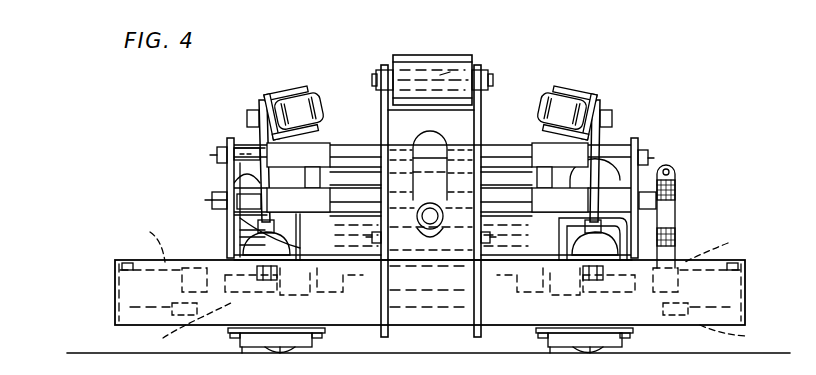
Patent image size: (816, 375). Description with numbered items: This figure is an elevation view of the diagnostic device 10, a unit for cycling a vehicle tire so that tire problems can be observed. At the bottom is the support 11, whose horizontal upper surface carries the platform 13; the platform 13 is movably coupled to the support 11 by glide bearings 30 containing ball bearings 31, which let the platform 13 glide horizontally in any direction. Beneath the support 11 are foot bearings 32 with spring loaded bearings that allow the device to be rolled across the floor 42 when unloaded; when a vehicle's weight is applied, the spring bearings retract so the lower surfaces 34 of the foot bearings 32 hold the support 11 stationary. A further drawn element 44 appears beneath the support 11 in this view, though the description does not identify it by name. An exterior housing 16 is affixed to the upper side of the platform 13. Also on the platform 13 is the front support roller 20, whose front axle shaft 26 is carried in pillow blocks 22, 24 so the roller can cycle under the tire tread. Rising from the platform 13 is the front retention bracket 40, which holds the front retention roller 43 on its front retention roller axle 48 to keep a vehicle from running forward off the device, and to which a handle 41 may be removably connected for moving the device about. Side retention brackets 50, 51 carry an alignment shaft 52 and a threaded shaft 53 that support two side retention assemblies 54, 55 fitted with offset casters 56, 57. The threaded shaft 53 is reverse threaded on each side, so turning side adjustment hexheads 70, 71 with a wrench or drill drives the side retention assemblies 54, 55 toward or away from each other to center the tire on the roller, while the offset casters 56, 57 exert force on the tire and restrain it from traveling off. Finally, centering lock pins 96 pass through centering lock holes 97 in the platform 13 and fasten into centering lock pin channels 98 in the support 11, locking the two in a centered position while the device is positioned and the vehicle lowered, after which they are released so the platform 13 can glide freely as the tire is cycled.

The diagnostic device 10 is at (134, 125).
The support 11 is at (112, 307).
The platform 13 is at (137, 262).
The exterior housing 16 is at (114, 280).
The front support roller 20 is at (490, 185).
The pillow block 22 is at (636, 160).
The pillow block 24 is at (238, 190).
The front axle shaft 26 is at (243, 258).
The glide bearings 30 is at (228, 334).
The ball bearings 31 is at (325, 329).
The foot bearings 32 is at (240, 349).
The lower surfaces 34 is at (288, 349).
The front retention bracket 40 is at (381, 98).
The handle 41 is at (425, 208).
The floor 42 is at (385, 341).
The front retention roller 43 is at (412, 62).
The pedestal 44 is at (277, 347).
The front retention roller axle 48 is at (448, 70).
The side retention bracket 50 is at (222, 160).
The side retention bracket 51 is at (630, 238).
The alignment shaft 52 is at (605, 180).
The threaded shaft 53 is at (236, 180).
The side retention assembly 54 is at (260, 105).
The side retention assembly 55 is at (597, 145).
The offset caster 56 is at (288, 95).
The offset caster 57 is at (568, 92).
The side adjustment hexhead 70 is at (210, 198).
The side adjustment hexhead 71 is at (657, 204).
The centering lock pin 96 is at (676, 176).
The centering lock hole 97 is at (440, 238).
The centering lock pin channel 98 is at (448, 328).